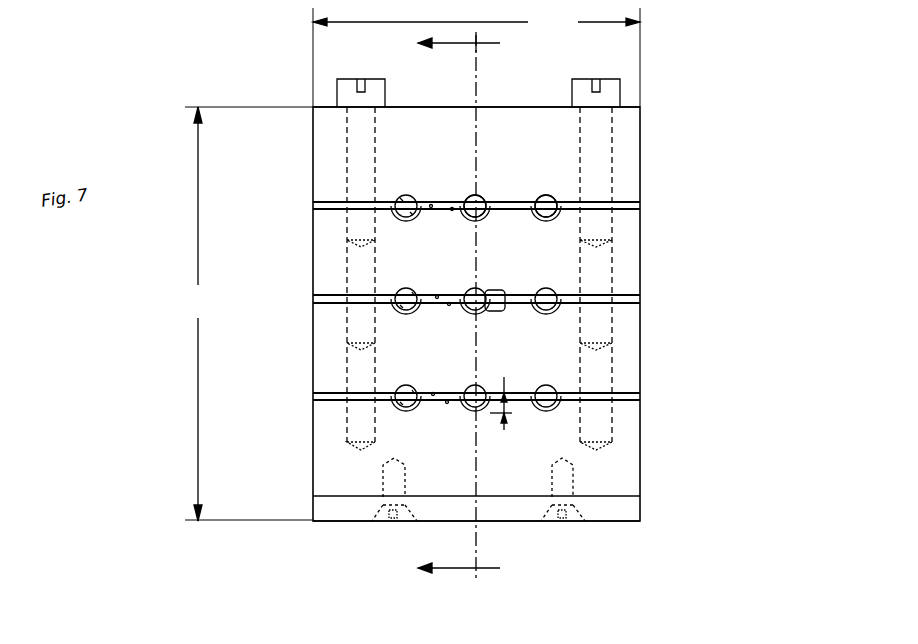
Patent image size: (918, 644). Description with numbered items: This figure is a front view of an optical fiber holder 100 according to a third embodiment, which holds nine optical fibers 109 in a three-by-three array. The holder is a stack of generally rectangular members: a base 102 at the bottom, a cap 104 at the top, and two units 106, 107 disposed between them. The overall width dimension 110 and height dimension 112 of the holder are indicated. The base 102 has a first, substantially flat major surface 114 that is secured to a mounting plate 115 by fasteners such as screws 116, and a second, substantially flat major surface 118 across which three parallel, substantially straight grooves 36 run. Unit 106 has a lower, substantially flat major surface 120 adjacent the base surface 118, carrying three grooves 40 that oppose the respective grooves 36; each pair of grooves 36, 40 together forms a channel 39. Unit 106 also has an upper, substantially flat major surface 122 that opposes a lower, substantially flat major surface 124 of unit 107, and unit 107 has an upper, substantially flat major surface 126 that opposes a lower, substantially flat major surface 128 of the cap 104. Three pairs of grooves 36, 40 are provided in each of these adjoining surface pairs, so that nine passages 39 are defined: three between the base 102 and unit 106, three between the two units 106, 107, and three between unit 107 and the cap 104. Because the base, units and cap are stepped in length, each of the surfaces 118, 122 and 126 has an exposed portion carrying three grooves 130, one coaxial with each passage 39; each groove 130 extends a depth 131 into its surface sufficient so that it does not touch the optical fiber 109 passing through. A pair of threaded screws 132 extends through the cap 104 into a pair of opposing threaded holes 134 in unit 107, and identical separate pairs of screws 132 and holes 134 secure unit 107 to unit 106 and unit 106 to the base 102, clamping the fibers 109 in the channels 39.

The optical fiber holder 100 is at (194, 44).
The cap 104 is at (635, 130).
The width dimension 110 is at (476, 22).
The height dimension 112 is at (247, 314).
The threaded screws 132 is at (380, 96).
The threaded holes 134 is at (315, 227).
The unit 107 is at (635, 257).
The unit 106 is at (635, 368).
The mounting plate 115 is at (635, 510).
The base 102 is at (314, 472).
The first major surface 114 is at (342, 496).
The grooves 40 is at (406, 196).
The grooves 36 is at (406, 216).
The grooves 130 is at (488, 214).
The optical fibers 109 is at (545, 196).
The lower major surface 128 is at (431, 197).
The upper major surface 126 is at (452, 210).
The lower major surface 124 is at (437, 296).
The upper major surface 122 is at (449, 306).
The channel 39 is at (508, 296).
The lower major surface 120 is at (433, 395).
The second major surface 118 is at (446, 404).
The depth 131 is at (506, 415).
The screws 116 is at (386, 514).